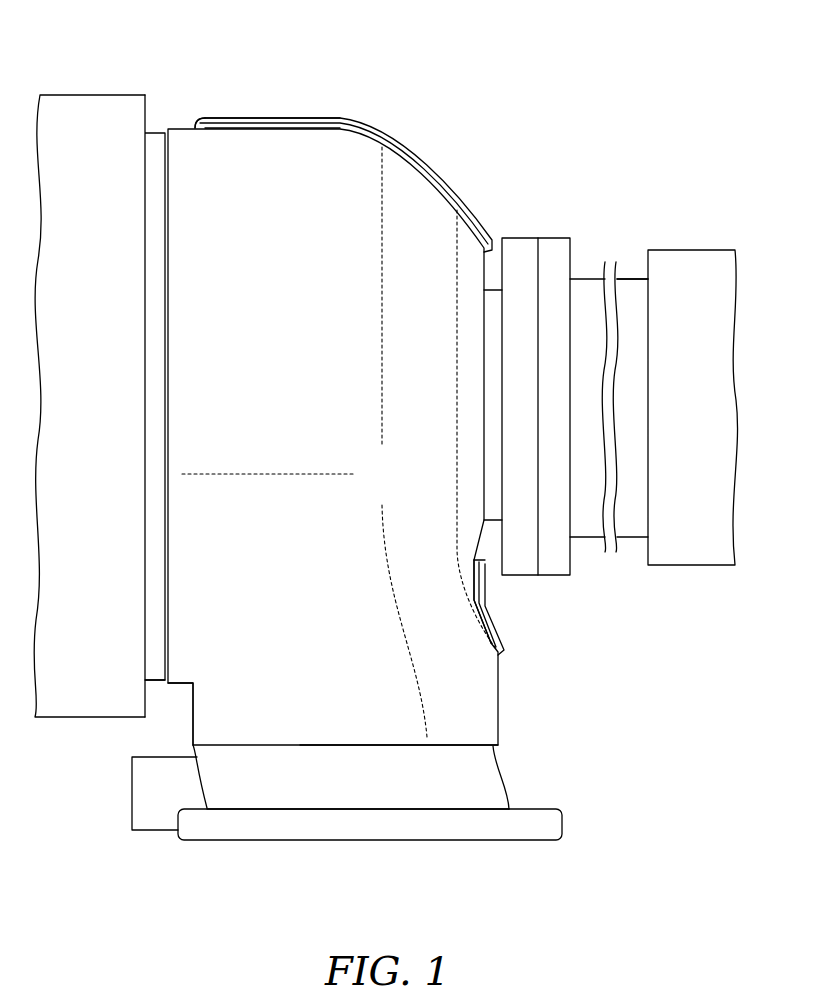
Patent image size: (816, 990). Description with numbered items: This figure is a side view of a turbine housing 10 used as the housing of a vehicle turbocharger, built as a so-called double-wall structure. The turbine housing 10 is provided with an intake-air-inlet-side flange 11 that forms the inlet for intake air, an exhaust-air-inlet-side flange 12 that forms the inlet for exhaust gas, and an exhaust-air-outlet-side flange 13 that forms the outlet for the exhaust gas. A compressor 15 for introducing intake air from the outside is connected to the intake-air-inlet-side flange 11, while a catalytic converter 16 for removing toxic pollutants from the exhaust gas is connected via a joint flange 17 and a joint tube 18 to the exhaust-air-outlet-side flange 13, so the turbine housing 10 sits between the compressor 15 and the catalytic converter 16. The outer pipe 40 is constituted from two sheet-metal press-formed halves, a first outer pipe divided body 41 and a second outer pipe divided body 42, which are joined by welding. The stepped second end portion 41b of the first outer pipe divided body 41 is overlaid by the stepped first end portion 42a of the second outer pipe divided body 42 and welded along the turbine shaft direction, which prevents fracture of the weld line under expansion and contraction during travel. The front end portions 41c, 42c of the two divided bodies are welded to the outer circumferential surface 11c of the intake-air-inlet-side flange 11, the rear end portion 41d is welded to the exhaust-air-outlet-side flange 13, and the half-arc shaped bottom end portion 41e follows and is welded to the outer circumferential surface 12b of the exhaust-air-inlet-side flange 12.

The turbine housing 10 is at (383, 88).
The intake-air-inlet-side flange 11 is at (155, 132).
The outer circumferential surface of the intake-air-inlet-side flange 11c is at (153, 630).
The exhaust-air-inlet-side flange 12 is at (311, 840).
The outer circumferential surface of the exhaust-air-inlet-side flange 12b is at (350, 750).
The exhaust-air-outlet-side flange 13 is at (522, 237).
The compressor 15 is at (85, 93).
The catalytic converter 16 is at (700, 249).
The joint flange 17 is at (573, 240).
The joint tube 18 is at (633, 278).
The outer pipe 40 is at (383, 464).
The first outer pipe divided body 41 is at (499, 690).
The second end portion of the first outer pipe divided body 41b is at (338, 123).
The end portion of the first outer pipe divided body on the front circumferential ed 41c is at (177, 688).
The end portion of the first outer pipe divided body on the rear circumferential edg 41d is at (495, 500).
The bottom end portion of the first outer pipe divided body 41e is at (398, 725).
The second outer pipe divided body 42 is at (423, 137).
The first end portion of the second outer pipe divided body 42a is at (287, 116).
The end portion of the second outer pipe divided body on the front circumferential e 42c is at (190, 121).